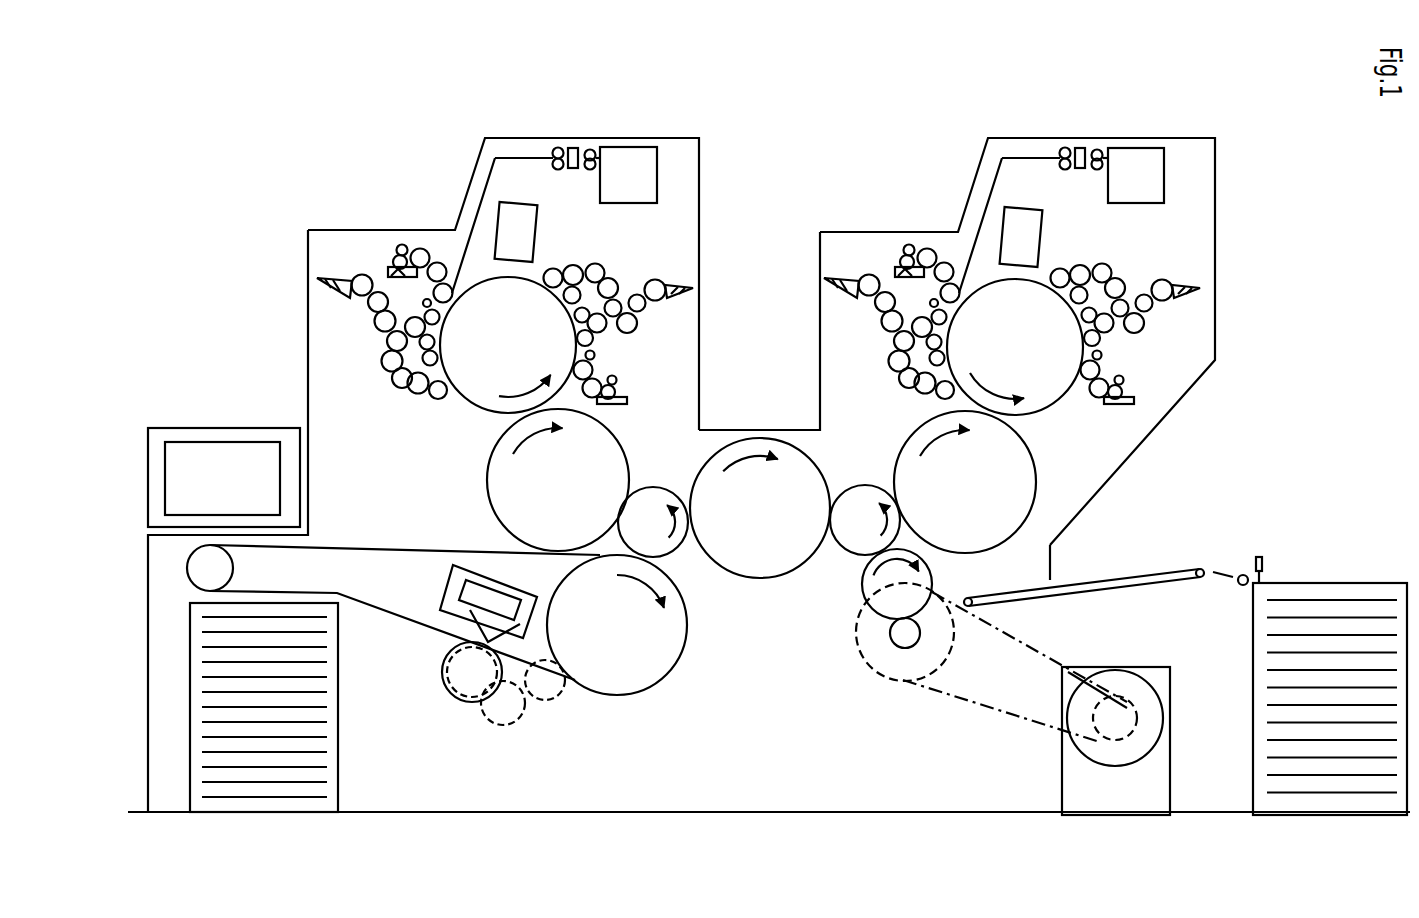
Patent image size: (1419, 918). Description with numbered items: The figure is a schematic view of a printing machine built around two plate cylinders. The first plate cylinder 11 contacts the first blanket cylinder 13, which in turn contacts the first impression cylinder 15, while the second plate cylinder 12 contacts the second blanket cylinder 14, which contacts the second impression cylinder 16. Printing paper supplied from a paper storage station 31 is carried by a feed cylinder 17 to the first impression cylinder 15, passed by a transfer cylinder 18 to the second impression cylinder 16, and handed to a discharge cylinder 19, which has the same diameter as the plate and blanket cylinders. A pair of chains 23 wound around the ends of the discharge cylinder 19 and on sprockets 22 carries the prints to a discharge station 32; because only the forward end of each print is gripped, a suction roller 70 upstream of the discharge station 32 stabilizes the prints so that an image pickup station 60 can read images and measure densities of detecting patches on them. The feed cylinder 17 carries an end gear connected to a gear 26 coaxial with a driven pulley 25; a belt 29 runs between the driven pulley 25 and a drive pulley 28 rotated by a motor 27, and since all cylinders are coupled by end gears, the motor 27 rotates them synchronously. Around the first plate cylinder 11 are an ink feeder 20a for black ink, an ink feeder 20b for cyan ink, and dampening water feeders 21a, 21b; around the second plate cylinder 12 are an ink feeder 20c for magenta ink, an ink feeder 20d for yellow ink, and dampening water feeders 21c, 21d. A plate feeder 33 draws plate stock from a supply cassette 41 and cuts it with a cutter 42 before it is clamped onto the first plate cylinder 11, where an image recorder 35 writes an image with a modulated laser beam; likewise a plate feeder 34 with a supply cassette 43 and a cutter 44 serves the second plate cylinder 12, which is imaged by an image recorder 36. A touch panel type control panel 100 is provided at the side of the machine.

The control panel 100 is at (218, 462).
The first plate cylinder 11 is at (1038, 390).
The second plate cylinder 12 is at (480, 400).
The first blanket cylinder 13 is at (1036, 478).
The second blanket cylinder 14 is at (490, 485).
The first impression cylinder 15 is at (860, 500).
The second impression cylinder 16 is at (663, 495).
The feed cylinder 17 is at (862, 590).
The transfer cylinder 18 is at (760, 560).
The discharge cylinder 19 is at (672, 670).
The ink feeder 20a is at (1135, 268).
The ink feeder 20b is at (882, 352).
The ink feeder 20c is at (608, 262).
The ink feeder 20d is at (378, 353).
The dampening water feeder 21a is at (1137, 368).
The dampening water feeder 21b is at (930, 250).
The dampening water feeder 21c is at (615, 366).
The dampening water feeder 21d is at (440, 255).
The sprockets 22 is at (233, 568).
The chains 23 is at (350, 545).
The driven pulley 25 is at (883, 672).
The gear 26 is at (955, 660).
The motor 27 is at (1152, 728).
The drive pulley 28 is at (1178, 685).
The belt 29 is at (982, 700).
The paper storage station 31 is at (1328, 583).
The discharge station 32 is at (338, 695).
The plate feeder 33 is at (1030, 122).
The plate feeder 34 is at (543, 123).
The image recorder 35 is at (1035, 230).
The image recorder 36 is at (530, 228).
The supply cassette 41 is at (1143, 158).
The cutter 42 is at (1082, 146).
The supply cassette 43 is at (637, 155).
The cutter 44 is at (570, 148).
The image pickup station 60 is at (418, 575).
The suction roller 70 is at (468, 702).